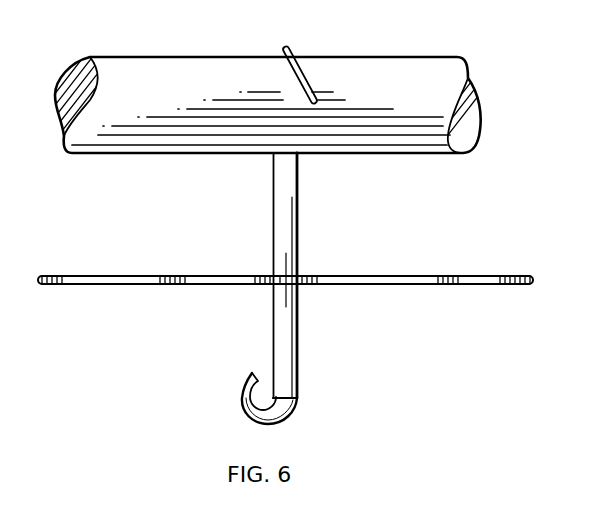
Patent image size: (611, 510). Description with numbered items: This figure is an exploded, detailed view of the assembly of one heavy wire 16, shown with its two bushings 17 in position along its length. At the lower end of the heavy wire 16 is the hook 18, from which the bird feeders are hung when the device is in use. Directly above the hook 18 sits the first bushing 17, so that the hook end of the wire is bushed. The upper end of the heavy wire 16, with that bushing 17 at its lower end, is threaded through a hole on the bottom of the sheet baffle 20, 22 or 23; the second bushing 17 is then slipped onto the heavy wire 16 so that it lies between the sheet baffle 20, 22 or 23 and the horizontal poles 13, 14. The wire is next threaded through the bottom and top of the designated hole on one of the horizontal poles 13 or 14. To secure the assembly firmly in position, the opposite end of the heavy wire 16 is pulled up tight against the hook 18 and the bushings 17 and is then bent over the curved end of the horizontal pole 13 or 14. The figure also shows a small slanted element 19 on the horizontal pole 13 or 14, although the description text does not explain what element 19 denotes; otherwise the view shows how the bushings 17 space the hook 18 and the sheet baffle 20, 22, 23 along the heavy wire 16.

The horizontal pole 13 is at (255, 91).
The horizontal pole 14 is at (181, 66).
The heavy wire 16 is at (254, 398).
The bushing 17 is at (277, 225).
The hook 18 is at (244, 404).
The pin 19 is at (303, 80).
The sheet baffle 20 is at (285, 317).
The sheet baffle 22 is at (285, 280).
The sheet baffle 23 is at (425, 284).